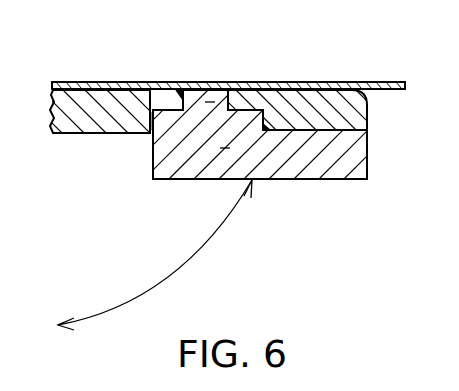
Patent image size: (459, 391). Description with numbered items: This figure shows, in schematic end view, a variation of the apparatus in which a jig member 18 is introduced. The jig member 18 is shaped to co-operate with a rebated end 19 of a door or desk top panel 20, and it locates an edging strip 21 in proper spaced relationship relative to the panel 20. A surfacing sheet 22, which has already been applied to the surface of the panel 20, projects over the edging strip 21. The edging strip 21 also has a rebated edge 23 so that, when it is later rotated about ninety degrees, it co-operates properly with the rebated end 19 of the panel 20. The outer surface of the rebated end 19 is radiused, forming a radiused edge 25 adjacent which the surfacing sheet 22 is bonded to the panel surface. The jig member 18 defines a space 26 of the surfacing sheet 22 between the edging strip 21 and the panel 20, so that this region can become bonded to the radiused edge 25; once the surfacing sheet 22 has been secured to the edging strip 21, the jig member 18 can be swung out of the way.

The jig member 18 is at (292, 166).
The rebated end 19 is at (167, 97).
The panel 20 is at (83, 112).
The edging strip 21 is at (332, 105).
The surfacing sheet 22 is at (257, 87).
The rebated edge 23 is at (225, 148).
The radiused edge 25 is at (186, 87).
The space 26 is at (210, 102).